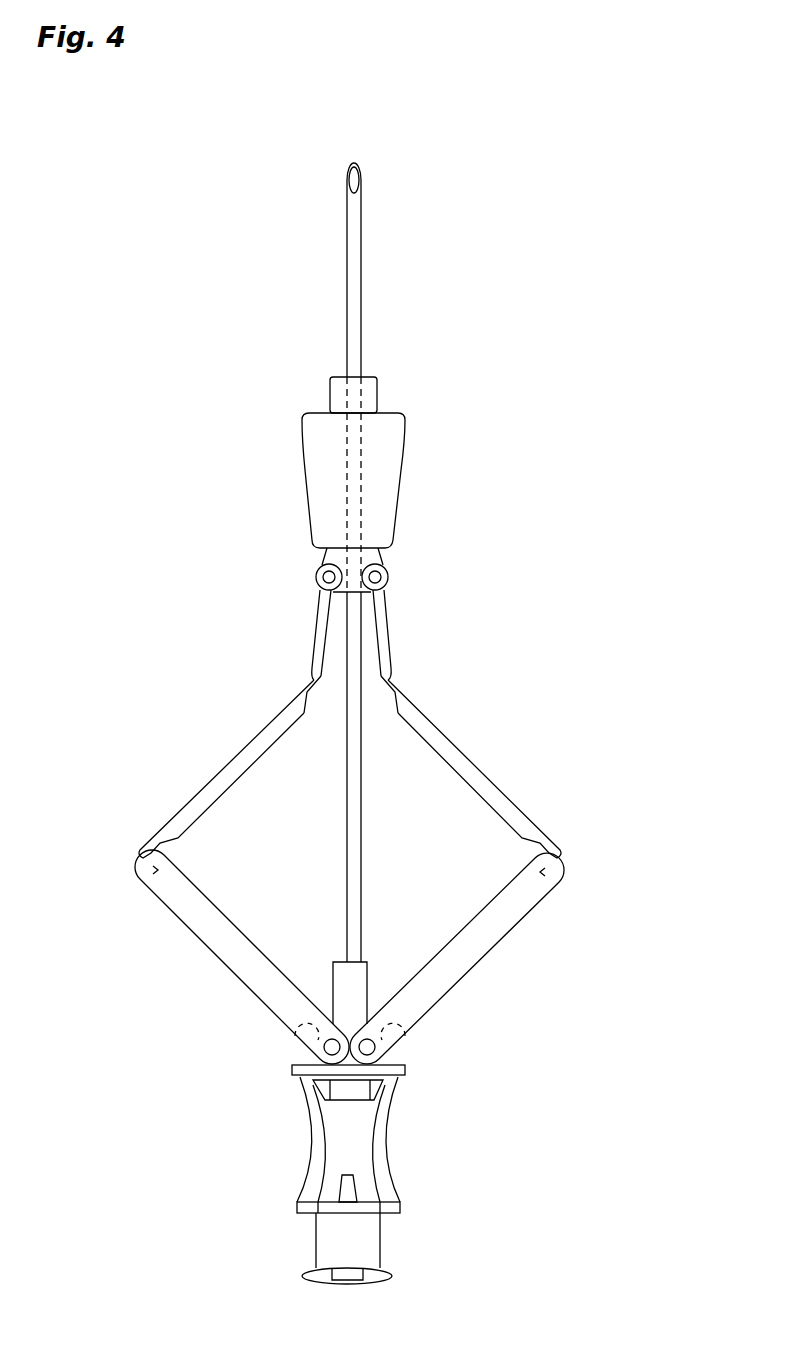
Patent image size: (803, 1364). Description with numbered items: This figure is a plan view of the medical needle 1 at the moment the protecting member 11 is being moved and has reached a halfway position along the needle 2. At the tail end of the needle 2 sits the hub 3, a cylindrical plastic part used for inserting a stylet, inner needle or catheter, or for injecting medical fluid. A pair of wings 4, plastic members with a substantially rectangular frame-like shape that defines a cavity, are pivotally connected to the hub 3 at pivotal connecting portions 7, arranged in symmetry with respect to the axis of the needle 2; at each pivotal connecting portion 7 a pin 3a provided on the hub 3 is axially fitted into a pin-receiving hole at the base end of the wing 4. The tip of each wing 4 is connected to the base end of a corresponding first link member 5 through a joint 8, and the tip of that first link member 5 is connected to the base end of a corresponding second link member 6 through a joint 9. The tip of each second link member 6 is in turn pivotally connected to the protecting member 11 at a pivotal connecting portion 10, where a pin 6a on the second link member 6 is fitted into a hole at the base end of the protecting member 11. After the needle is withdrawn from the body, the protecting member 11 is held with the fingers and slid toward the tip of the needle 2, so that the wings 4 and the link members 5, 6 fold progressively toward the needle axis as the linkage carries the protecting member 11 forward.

The medical needle 1 is at (403, 92).
The needle 2 is at (362, 300).
The protecting member 11 is at (405, 413).
The pivotal connecting portion 10 is at (388, 572).
The pin 6a is at (325, 576).
The second link member 6 is at (391, 632).
The joint 9 is at (393, 680).
The first link member 5 is at (472, 757).
The joint 8 is at (555, 853).
The wing 4 is at (452, 990).
The pin 3a is at (330, 1047).
The pivotal connecting portion 7 is at (383, 1048).
The hub 3 is at (383, 1168).